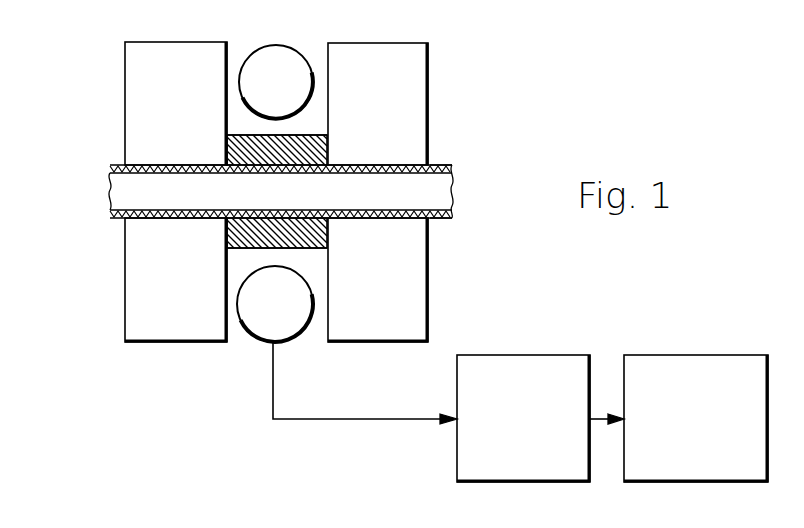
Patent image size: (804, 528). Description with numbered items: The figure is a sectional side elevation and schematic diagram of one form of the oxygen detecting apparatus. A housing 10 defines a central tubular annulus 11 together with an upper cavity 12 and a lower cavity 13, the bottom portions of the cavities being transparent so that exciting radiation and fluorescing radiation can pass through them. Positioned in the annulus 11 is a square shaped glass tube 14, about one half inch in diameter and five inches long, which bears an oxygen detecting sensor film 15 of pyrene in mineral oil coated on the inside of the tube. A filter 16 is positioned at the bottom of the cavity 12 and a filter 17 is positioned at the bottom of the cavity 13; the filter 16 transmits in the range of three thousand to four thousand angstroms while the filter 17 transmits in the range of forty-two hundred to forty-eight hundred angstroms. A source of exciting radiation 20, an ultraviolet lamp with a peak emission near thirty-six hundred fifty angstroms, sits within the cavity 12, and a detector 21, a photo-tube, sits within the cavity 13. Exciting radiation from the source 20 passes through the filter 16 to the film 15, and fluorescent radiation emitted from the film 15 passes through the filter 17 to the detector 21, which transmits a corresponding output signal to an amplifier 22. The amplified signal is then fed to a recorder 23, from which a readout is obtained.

The housing 10 is at (430, 100).
The central tubular annulus 11 is at (110, 218).
The cavity 12 is at (245, 124).
The cavity 13 is at (250, 259).
The square shaped glass tube 14 is at (110, 165).
The oxygen detecting sensor film 15 is at (452, 207).
The filter 16 is at (328, 152).
The filter 17 is at (328, 232).
The source of exciting radiation 20 is at (283, 43).
The detector 21 is at (262, 344).
The amplifier 22 is at (500, 355).
The recorder 23 is at (678, 355).